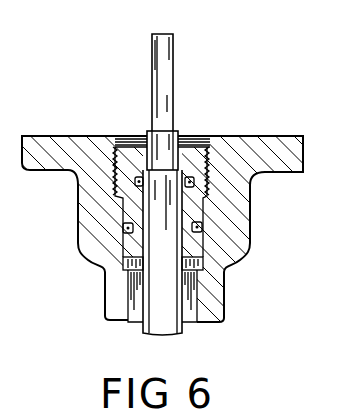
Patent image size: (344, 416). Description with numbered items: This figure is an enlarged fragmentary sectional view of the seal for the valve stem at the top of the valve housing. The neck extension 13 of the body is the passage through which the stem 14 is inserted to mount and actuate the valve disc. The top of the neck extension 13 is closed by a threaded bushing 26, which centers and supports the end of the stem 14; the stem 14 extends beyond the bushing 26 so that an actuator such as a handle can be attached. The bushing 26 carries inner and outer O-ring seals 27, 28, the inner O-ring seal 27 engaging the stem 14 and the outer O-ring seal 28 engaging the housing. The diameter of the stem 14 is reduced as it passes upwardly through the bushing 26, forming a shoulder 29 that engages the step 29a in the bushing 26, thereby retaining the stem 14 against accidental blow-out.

The neck extension 13 is at (225, 290).
The stem 14 is at (176, 48).
The threaded bushing 26 is at (189, 138).
The inner O-ring seal 27 is at (137, 176).
The outer O-ring seal 28 is at (123, 229).
The shoulder 29 is at (160, 131).
The step 29a is at (178, 178).